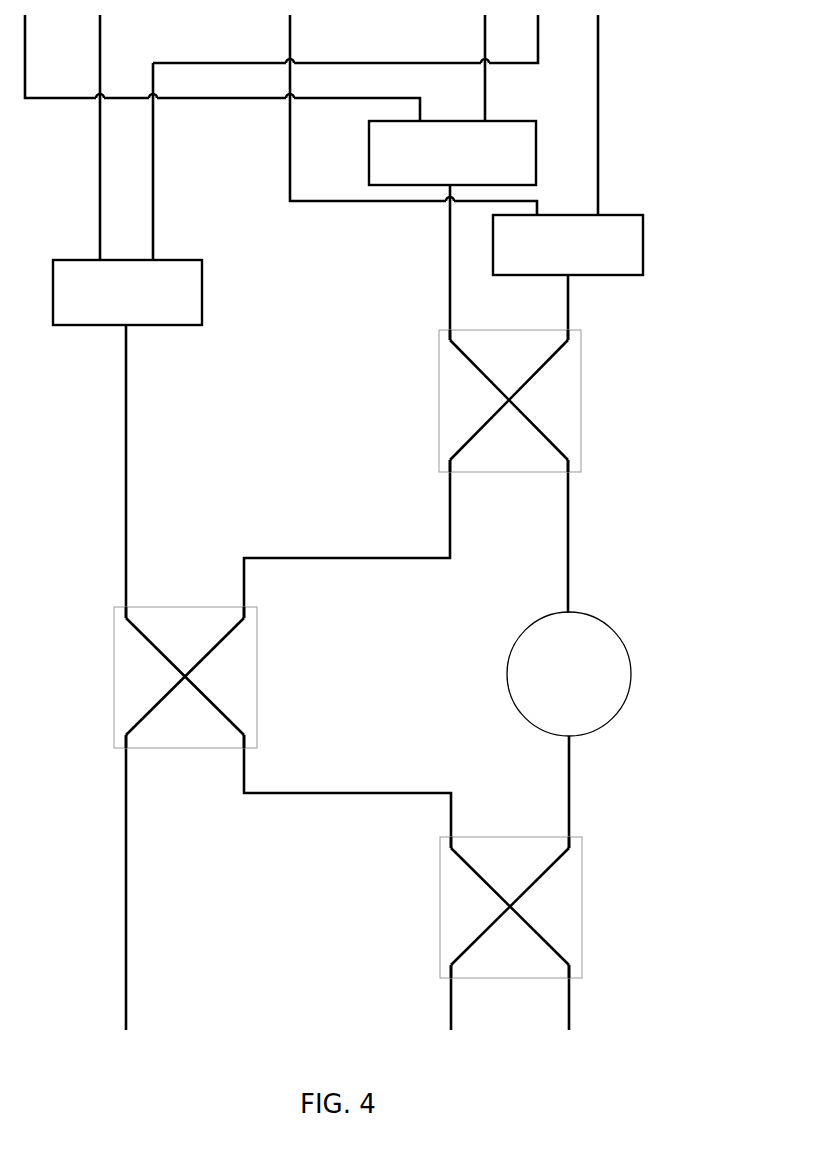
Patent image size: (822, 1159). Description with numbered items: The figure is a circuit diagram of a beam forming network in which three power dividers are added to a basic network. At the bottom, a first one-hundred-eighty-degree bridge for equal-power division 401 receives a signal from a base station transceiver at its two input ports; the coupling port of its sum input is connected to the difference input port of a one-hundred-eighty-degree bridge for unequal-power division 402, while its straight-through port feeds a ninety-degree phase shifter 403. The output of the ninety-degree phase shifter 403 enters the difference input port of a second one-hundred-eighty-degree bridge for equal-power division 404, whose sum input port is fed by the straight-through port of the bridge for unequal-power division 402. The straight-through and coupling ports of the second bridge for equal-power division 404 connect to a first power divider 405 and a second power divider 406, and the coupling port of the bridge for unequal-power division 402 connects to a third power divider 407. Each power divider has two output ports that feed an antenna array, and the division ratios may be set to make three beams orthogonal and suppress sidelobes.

The first 180-degree bridge for equal-power division 401 is at (582, 900).
The 180-degree bridge for unequal-power division 402 is at (114, 677).
The 90-degree phase shifter 403 is at (631, 675).
The second 180-degree bridge for equal-power division 404 is at (581, 400).
The first power divider 405 is at (643, 243).
The second power divider 406 is at (537, 152).
The third power divider 407 is at (203, 293).